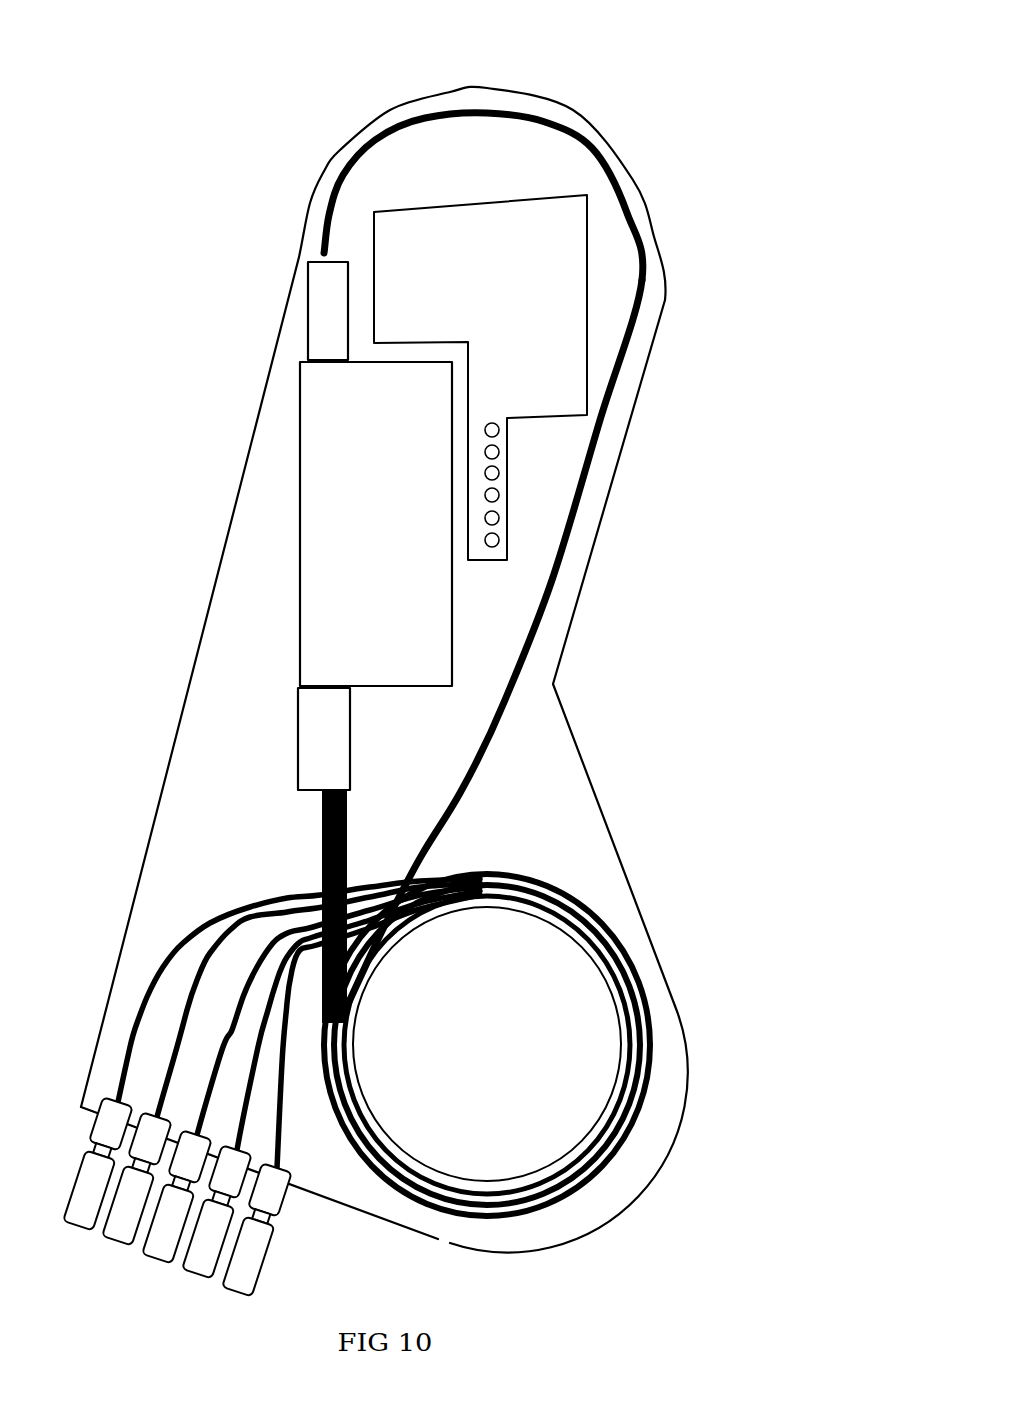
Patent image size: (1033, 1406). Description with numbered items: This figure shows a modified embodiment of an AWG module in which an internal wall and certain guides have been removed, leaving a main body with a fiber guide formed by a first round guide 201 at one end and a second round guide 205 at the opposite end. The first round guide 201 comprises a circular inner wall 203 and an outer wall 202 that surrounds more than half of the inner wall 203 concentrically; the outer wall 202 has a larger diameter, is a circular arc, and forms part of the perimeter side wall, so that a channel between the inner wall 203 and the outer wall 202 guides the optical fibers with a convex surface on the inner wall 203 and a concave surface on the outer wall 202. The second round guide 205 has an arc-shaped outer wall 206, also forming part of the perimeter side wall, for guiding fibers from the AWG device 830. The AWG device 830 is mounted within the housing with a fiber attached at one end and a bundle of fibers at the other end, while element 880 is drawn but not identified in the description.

The first round guide 201 is at (633, 1222).
The outer wall 202 is at (657, 1155).
The inner wall 203 is at (618, 1050).
The second round guide 205 is at (513, 72).
The outer wall 206 is at (578, 113).
The AWG device 830 is at (325, 463).
The cable jacket 880 is at (572, 728).